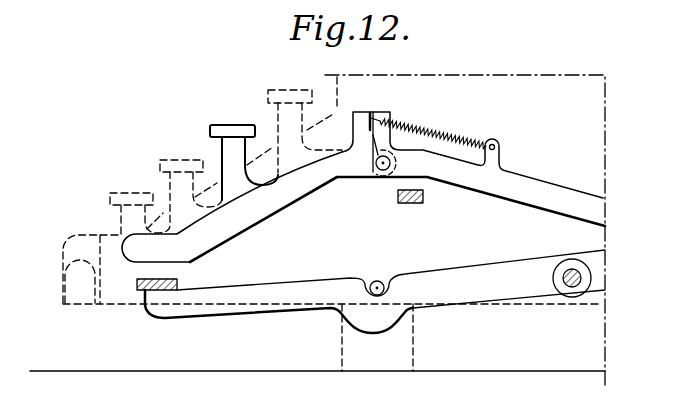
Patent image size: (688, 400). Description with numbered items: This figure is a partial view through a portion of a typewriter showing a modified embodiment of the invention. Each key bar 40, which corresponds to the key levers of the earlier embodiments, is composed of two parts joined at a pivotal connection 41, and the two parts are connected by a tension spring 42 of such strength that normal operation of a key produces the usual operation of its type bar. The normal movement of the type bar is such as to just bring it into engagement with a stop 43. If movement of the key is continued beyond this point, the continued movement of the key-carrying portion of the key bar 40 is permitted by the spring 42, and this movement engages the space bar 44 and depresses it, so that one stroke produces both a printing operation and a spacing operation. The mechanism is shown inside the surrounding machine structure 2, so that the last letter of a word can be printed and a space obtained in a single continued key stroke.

The casing frame 2 is at (605, 92).
The key bar 40 is at (527, 190).
The pivotal connection 41 is at (383, 165).
The tension spring 42 is at (436, 136).
The stop 43 is at (418, 203).
The space bar 44 is at (178, 283).